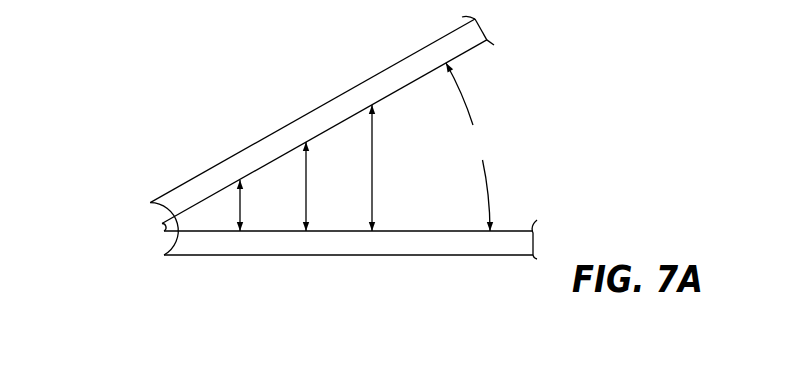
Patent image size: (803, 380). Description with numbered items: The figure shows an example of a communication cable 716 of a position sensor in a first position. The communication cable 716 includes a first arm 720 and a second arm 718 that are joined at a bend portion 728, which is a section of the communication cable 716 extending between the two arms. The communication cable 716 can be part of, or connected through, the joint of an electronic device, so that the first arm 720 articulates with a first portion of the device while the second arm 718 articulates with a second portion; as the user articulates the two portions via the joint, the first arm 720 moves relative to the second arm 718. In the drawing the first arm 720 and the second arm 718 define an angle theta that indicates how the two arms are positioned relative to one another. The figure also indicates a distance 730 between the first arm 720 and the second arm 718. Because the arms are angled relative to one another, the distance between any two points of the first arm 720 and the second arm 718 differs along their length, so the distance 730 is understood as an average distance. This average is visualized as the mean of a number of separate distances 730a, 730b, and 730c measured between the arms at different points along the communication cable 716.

The communication cable 716 is at (280, 165).
The first arm 720 is at (305, 128).
The second arm 718 is at (462, 241).
The bend portion 728 is at (136, 242).
The distance 730 is at (331, 236).
The separate distance 730a is at (243, 203).
The separate distance 730b is at (307, 188).
The separate distance 730c is at (372, 170).
The angle theta is at (468, 147).